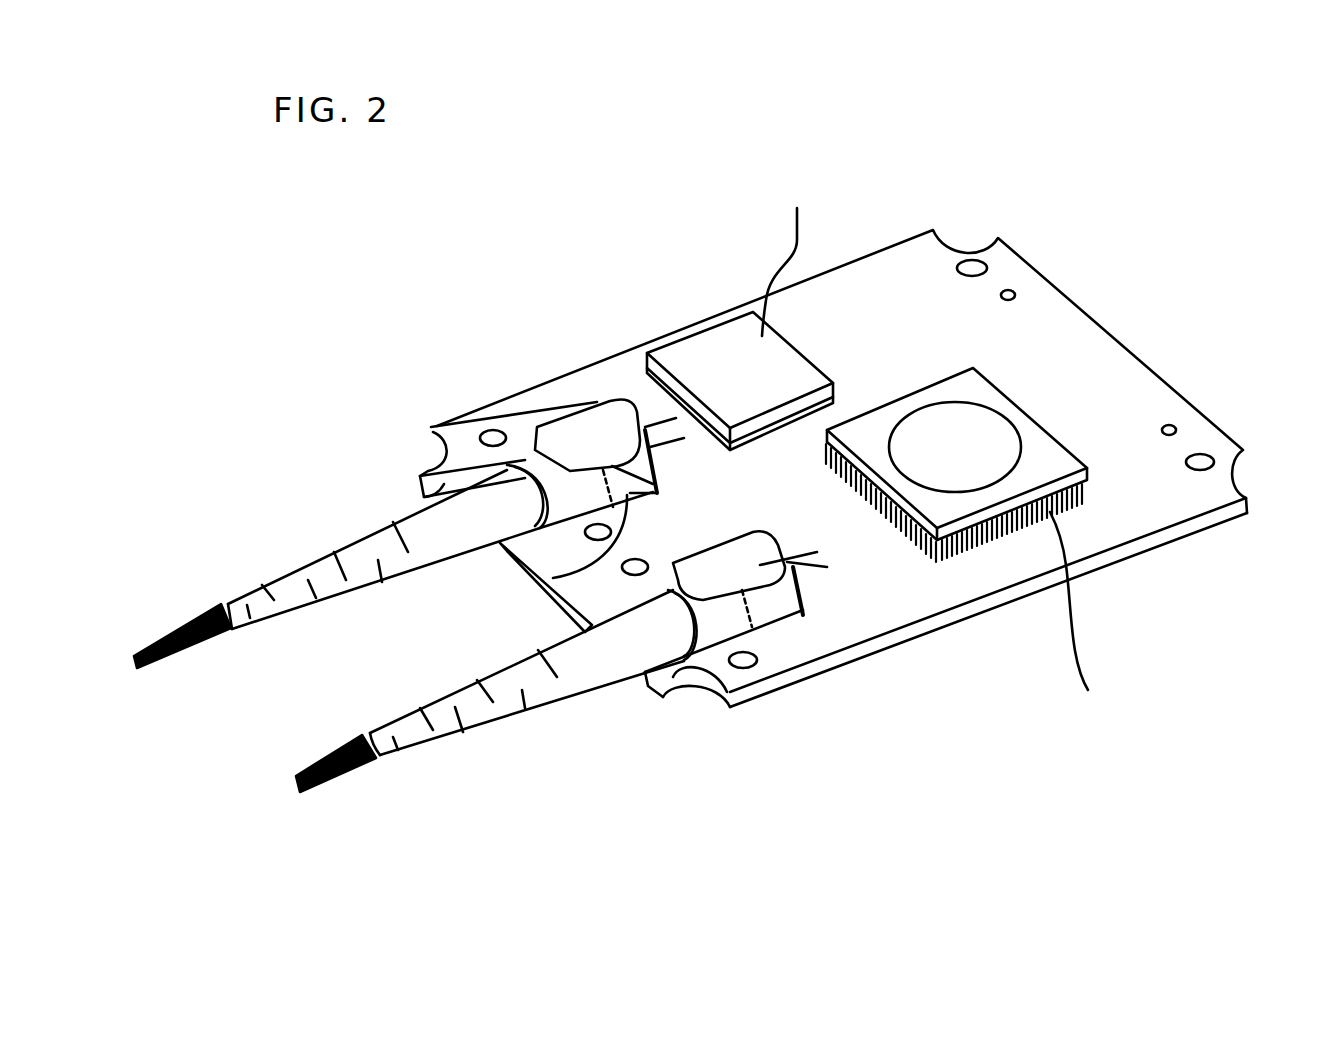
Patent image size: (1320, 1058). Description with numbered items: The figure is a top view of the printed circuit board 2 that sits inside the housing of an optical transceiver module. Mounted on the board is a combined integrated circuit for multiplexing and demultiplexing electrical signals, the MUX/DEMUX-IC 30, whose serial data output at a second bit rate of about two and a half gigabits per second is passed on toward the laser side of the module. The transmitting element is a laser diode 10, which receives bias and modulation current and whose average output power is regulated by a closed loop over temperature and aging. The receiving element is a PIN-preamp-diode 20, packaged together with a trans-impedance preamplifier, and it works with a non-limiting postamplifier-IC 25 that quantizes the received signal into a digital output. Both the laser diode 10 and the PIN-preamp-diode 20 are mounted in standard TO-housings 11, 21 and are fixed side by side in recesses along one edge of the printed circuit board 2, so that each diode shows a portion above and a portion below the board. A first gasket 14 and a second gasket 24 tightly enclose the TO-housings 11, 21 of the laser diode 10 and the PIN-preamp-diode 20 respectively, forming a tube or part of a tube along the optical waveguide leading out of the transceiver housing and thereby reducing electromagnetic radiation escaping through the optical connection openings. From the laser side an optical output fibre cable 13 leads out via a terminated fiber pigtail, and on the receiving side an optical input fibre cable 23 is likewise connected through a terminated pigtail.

The printed circuit board 2 is at (1143, 543).
The laser diode 10 is at (790, 570).
The TO-housing 11 is at (760, 578).
The optical output fibre cable 13 is at (345, 765).
The first gasket 14 is at (765, 566).
The PIN-preamp-diode 20 is at (413, 507).
The TO-housing 21 is at (535, 585).
The optical input fibre cable 23 is at (200, 633).
The second gasket 24 is at (565, 431).
The postamplifier-IC 25 is at (712, 362).
The MUX/DEMUX-IC 30 is at (990, 390).